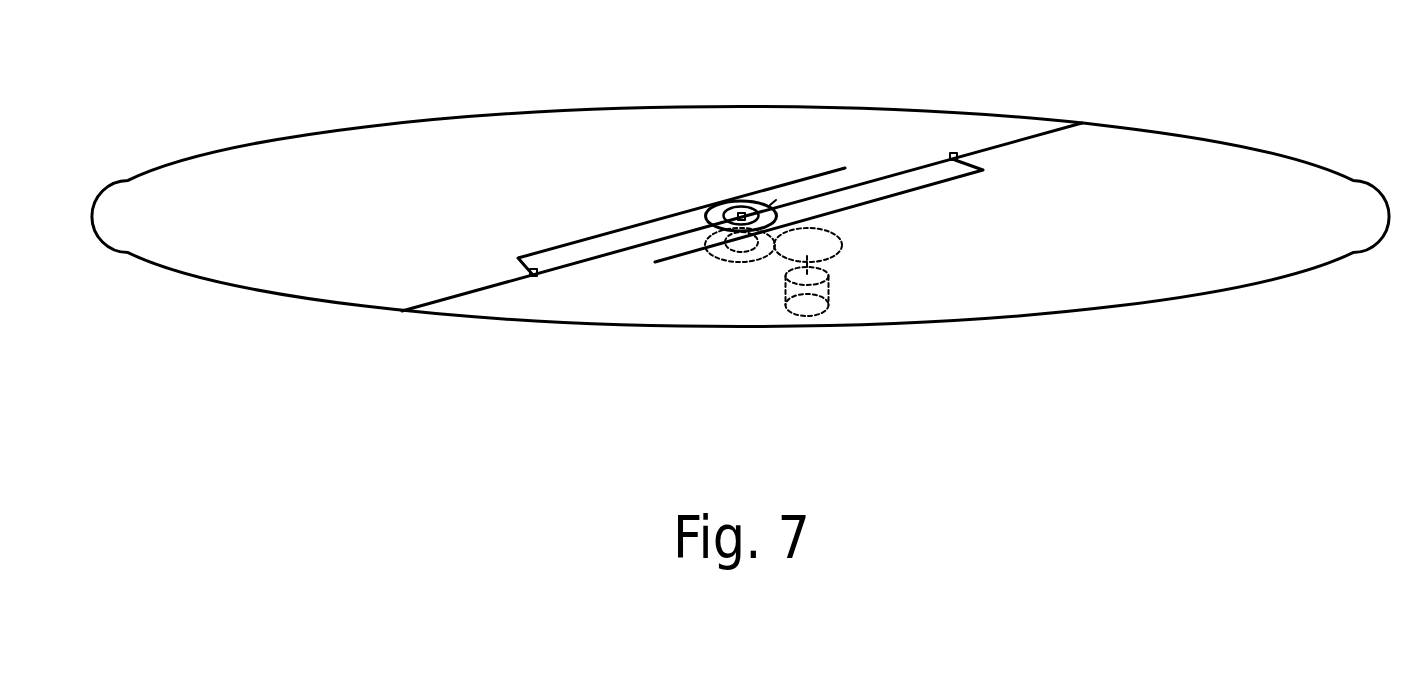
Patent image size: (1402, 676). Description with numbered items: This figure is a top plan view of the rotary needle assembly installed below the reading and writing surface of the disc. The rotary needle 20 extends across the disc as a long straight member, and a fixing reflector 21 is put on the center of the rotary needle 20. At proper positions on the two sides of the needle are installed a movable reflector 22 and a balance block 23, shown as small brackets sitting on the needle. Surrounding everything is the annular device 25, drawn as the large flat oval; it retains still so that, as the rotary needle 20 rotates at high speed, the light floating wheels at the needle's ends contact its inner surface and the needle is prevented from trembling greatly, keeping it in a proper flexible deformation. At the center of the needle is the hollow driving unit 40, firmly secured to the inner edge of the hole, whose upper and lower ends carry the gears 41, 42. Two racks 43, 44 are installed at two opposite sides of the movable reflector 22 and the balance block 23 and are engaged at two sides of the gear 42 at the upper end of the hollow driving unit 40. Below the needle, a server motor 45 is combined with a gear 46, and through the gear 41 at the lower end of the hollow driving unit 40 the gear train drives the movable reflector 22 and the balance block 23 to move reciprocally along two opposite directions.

The rotary needle 20 is at (1015, 140).
The fixing reflector 21 is at (740, 213).
The movable reflector 22 is at (534, 266).
The balance block 23 is at (954, 152).
The annular device 25 is at (1065, 313).
The hollow driving unit 40 is at (746, 206).
The gear 41 is at (722, 258).
The gear 42 is at (772, 204).
The rack 43 is at (915, 188).
The rack 44 is at (615, 230).
The server motor 45 is at (792, 310).
The gear 46 is at (840, 250).